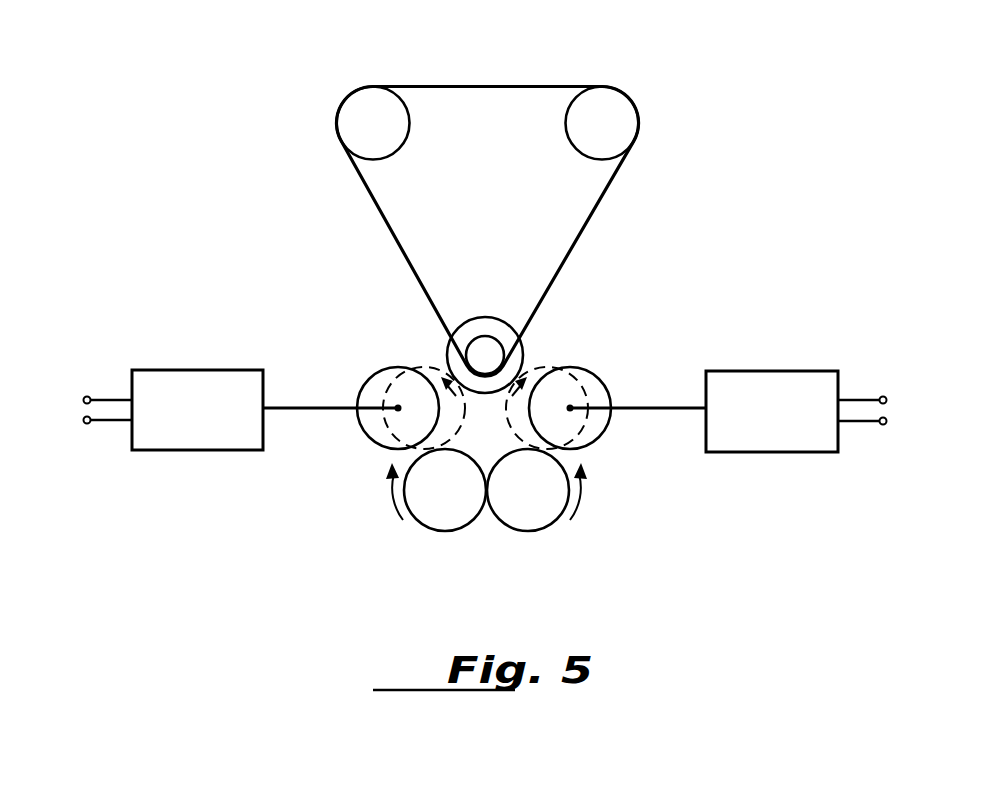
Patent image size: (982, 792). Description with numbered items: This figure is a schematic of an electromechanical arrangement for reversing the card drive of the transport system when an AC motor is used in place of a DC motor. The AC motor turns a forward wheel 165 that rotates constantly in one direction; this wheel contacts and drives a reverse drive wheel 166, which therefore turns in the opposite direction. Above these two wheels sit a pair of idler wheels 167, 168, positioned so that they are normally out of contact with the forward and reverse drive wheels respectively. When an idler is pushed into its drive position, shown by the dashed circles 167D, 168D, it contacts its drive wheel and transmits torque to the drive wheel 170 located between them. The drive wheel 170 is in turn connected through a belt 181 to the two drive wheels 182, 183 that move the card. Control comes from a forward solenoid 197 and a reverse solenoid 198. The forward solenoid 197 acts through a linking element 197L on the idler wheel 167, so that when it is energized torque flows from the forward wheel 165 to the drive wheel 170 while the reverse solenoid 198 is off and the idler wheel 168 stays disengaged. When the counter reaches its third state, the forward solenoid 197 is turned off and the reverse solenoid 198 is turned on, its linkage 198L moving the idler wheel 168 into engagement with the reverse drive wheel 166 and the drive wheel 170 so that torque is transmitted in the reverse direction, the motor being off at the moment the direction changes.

The forward wheel 165 is at (545, 515).
The reverse drive wheel 166 is at (433, 518).
The idler wheel 167 is at (600, 380).
The idler wheel drive position 167D is at (545, 366).
The idler wheel 168 is at (368, 380).
The idler wheel drive position 168D is at (431, 366).
The drive wheel 170 is at (490, 318).
The belt 181 is at (607, 192).
The drive wheel 182 is at (613, 110).
The drive wheel 183 is at (377, 110).
The forward solenoid 197 is at (782, 371).
The linking element 197L is at (660, 412).
The reverse solenoid 198 is at (203, 370).
The linkage 198L is at (322, 412).